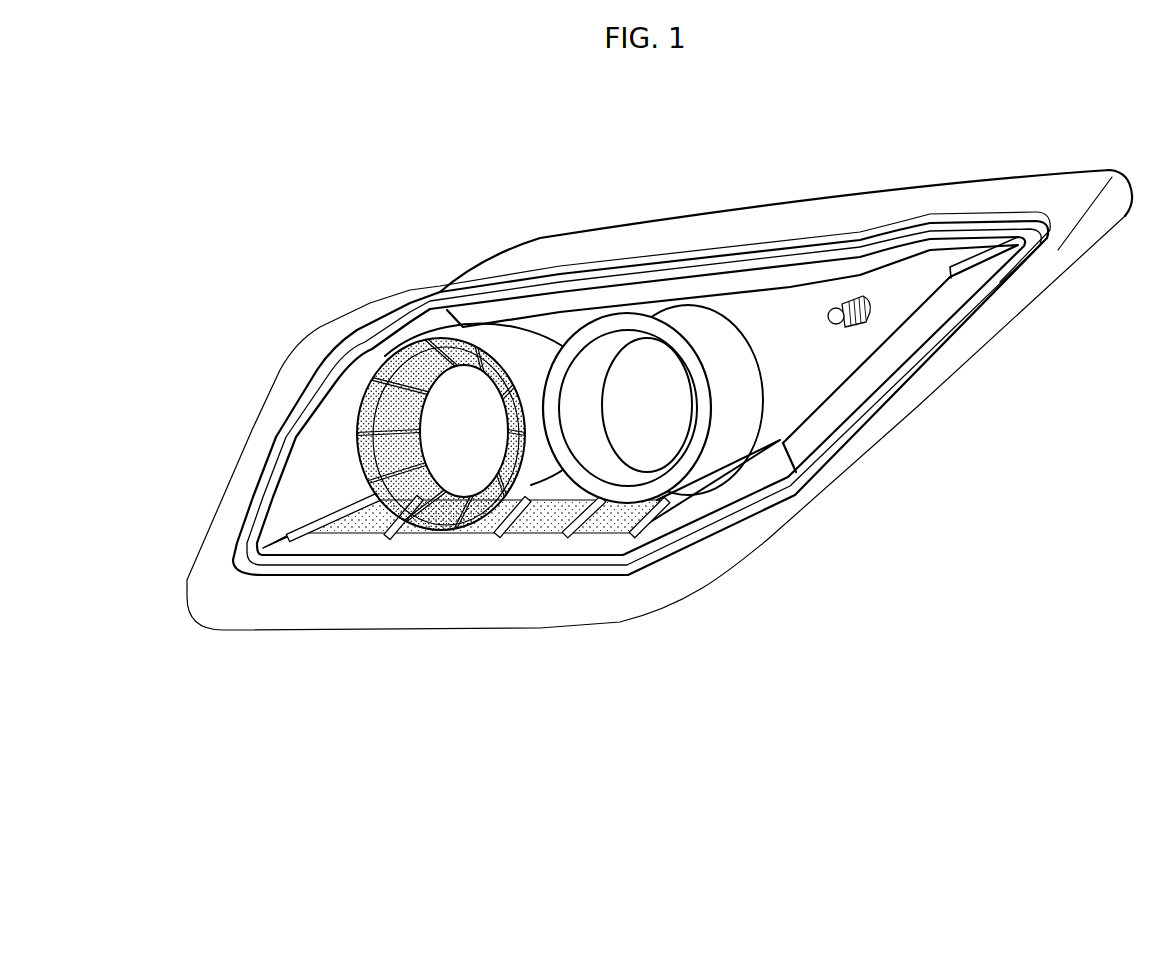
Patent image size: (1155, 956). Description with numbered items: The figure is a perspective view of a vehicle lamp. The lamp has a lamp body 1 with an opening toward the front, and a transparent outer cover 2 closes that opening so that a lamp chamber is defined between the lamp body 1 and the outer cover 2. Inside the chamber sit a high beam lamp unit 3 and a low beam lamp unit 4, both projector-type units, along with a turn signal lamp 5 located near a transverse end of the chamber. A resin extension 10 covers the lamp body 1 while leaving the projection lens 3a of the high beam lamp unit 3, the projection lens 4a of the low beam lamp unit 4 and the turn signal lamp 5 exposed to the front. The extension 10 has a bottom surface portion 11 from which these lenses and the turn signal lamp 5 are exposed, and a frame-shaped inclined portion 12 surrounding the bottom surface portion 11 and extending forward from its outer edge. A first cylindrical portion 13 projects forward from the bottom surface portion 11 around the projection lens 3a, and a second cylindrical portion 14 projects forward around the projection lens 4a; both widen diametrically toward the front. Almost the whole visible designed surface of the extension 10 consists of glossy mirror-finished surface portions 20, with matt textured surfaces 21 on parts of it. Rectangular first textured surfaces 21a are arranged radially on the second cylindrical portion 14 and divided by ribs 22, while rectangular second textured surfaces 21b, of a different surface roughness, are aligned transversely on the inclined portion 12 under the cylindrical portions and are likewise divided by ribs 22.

The lamp body 1 is at (1030, 190).
The outer cover 2 is at (212, 613).
The high beam lamp unit 3 is at (630, 437).
The projection lens 3a is at (650, 385).
The low beam lamp unit 4 is at (452, 477).
The projection lens 4a is at (458, 405).
The turn signal lamp 5 is at (838, 306).
The extension 10 is at (906, 343).
The bottom surface portion 11 is at (808, 383).
The inclined portion 12 is at (713, 500).
The first cylindrical portion 13 is at (718, 335).
The second cylindrical portion 14 is at (527, 350).
The mirror-finished surface portions 20 is at (355, 458).
The textured surfaces 21 is at (424, 427).
The first textured surfaces 21a is at (380, 388).
The second textured surfaces 21b is at (545, 525).
The ribs 22 is at (303, 527).